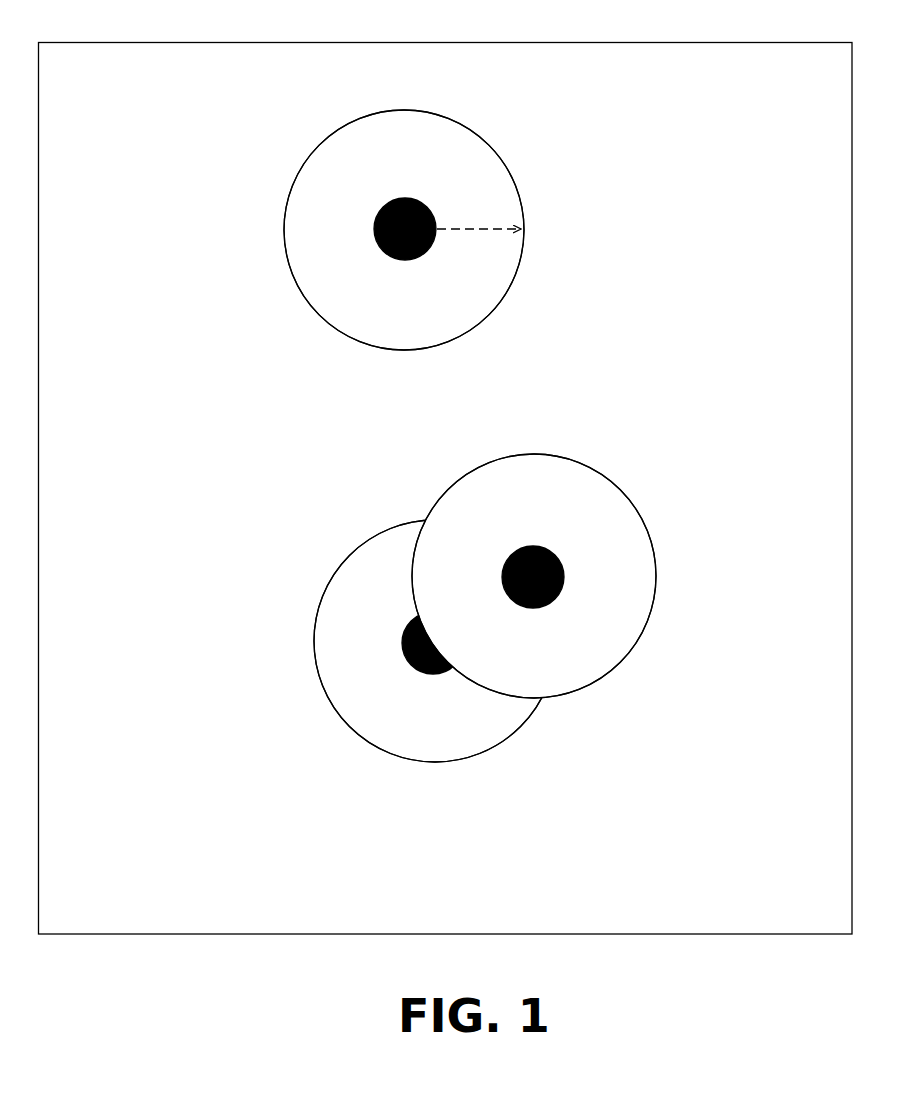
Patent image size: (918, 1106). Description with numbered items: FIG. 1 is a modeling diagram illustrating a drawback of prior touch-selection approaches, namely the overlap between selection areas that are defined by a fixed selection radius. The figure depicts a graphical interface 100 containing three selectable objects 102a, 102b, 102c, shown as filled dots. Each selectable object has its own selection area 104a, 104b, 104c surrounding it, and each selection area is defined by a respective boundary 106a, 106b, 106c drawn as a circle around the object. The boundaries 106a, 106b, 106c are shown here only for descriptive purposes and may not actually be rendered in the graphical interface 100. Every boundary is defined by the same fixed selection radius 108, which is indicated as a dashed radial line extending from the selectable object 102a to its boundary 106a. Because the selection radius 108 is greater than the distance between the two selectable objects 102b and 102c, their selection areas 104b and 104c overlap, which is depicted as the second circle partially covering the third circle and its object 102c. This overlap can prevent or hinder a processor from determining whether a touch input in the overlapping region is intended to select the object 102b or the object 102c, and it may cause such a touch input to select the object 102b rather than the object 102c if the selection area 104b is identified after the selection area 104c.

The graphical interface 100 is at (300, 30).
The selectable object 102a is at (367, 206).
The selectable object 102b is at (497, 557).
The selectable object 102c is at (402, 618).
The selection area 104a is at (320, 293).
The selection area 104b is at (611, 646).
The selection area 104c is at (362, 709).
The boundary 106a is at (343, 344).
The boundary 106b is at (608, 671).
The boundary 106c is at (364, 743).
The fixed selection radius 108 is at (468, 210).